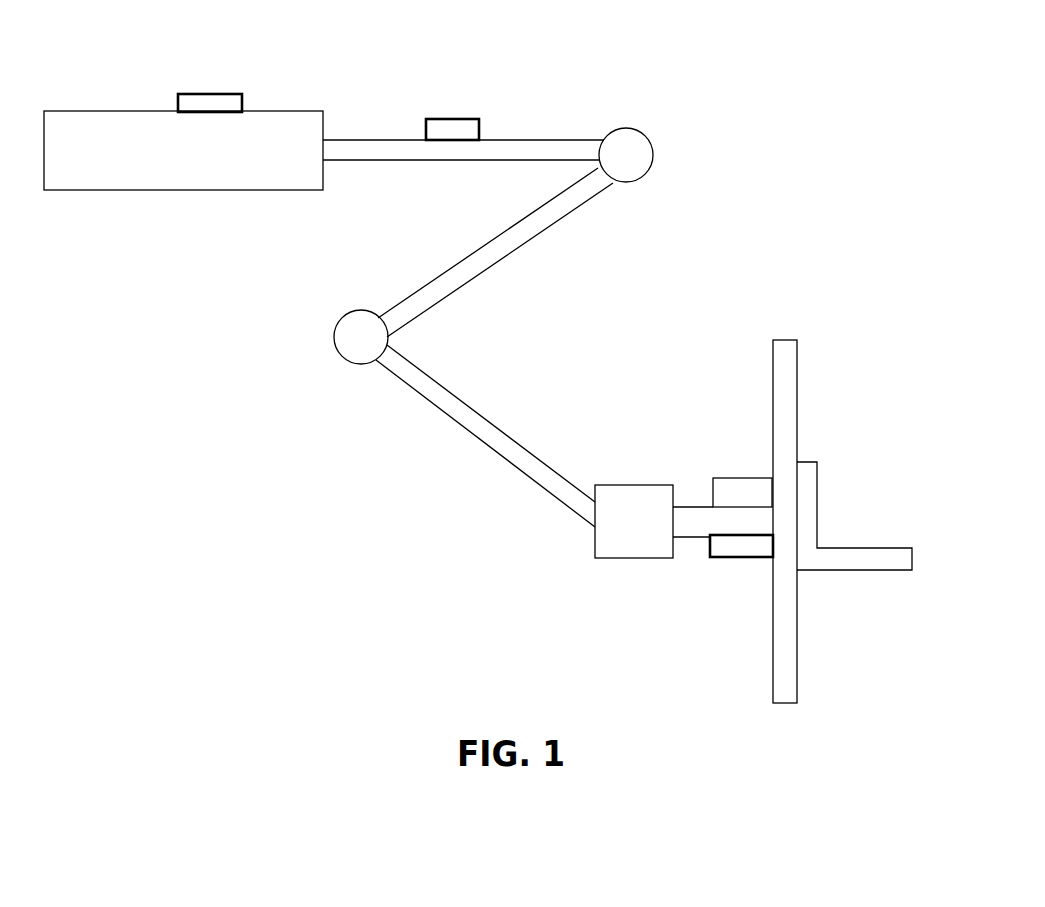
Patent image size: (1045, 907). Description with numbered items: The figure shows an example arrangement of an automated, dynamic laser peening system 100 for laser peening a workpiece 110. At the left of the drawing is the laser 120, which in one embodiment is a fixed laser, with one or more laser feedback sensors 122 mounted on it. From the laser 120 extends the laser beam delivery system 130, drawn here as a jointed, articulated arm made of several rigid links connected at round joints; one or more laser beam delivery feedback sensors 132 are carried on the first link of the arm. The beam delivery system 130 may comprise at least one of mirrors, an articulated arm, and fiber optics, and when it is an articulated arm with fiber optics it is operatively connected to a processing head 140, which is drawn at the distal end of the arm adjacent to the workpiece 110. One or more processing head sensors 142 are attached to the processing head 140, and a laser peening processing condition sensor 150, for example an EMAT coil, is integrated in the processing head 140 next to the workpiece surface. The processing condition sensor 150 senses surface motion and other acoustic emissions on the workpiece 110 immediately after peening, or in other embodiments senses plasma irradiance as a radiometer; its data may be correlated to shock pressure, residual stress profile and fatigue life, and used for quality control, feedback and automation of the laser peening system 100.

The laser peening system 100 is at (788, 243).
The workpiece 110 is at (788, 382).
The laser 120 is at (173, 162).
The laser feedback sensor 122 is at (204, 92).
The laser beam delivery system 130 is at (555, 213).
The laser beam delivery feedback sensor 132 is at (448, 118).
The processing head 140 is at (625, 538).
The processing head sensor 142 is at (743, 557).
The laser peening processing condition sensor 150 is at (743, 492).